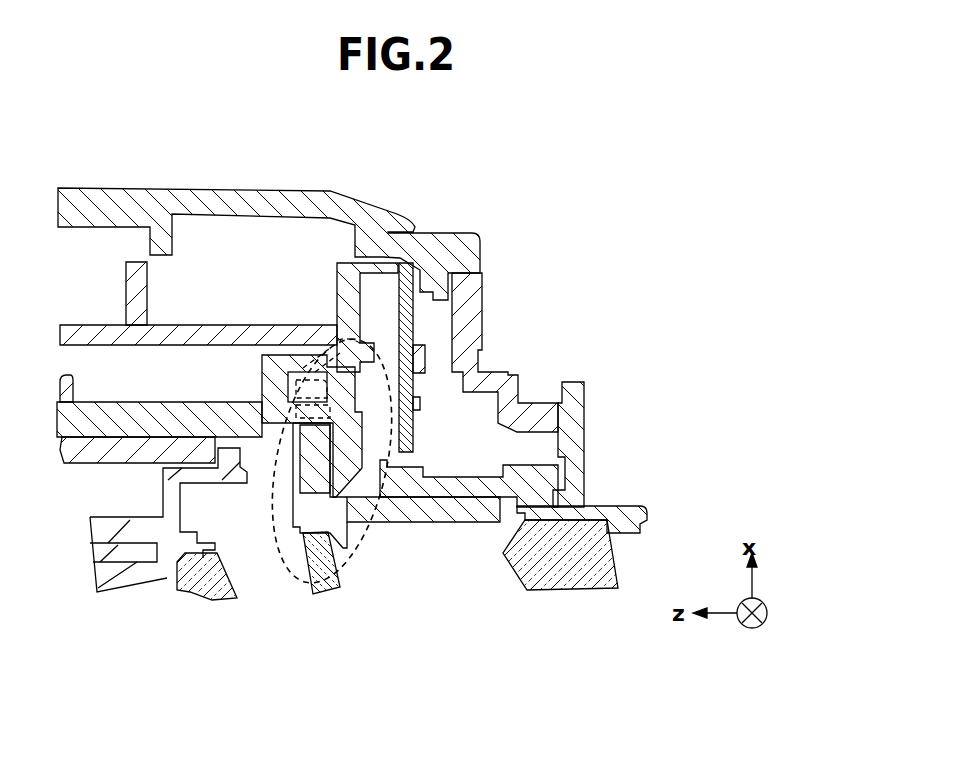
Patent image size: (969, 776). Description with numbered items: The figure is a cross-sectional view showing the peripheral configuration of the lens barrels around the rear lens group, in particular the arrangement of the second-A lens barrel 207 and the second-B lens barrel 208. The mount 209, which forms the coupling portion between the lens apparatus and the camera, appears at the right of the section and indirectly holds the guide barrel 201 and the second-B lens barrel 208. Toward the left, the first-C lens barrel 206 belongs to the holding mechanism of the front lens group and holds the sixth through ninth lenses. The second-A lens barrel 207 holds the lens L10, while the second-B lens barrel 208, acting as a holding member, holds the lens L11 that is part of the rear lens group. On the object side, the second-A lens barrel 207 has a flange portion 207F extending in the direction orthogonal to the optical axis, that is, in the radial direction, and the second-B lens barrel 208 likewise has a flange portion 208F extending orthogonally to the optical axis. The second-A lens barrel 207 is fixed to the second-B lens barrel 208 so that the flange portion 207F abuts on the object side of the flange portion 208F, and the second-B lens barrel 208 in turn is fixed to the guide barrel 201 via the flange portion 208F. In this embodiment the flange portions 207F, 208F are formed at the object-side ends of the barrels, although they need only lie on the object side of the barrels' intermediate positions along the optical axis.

The guide barrel 201 is at (258, 425).
The 1C lens barrel 206 is at (140, 537).
The 2A lens barrel 207 is at (403, 510).
The flange portion 207F is at (340, 545).
The 2B lens barrel 208 is at (475, 483).
The flange portion 208F is at (453, 480).
The mount 209 is at (573, 397).
The lens L10 is at (315, 597).
The lens L11 is at (583, 560).